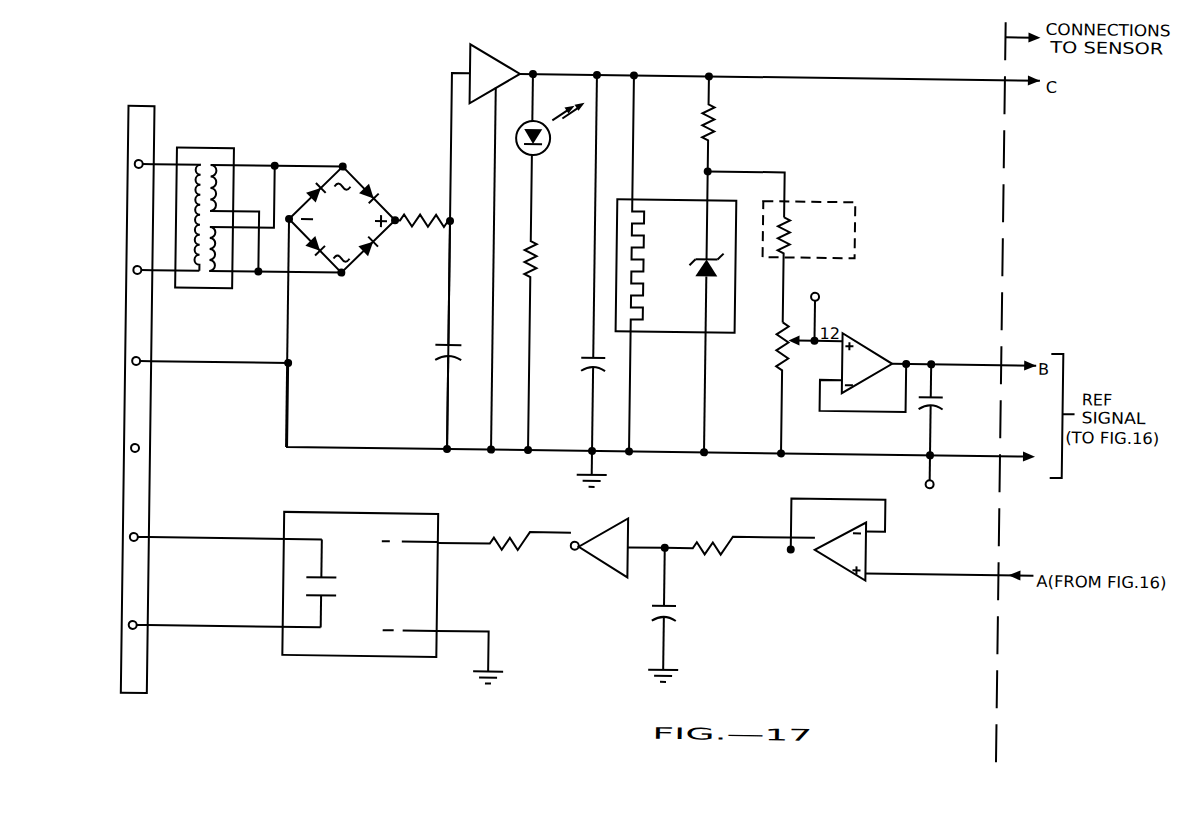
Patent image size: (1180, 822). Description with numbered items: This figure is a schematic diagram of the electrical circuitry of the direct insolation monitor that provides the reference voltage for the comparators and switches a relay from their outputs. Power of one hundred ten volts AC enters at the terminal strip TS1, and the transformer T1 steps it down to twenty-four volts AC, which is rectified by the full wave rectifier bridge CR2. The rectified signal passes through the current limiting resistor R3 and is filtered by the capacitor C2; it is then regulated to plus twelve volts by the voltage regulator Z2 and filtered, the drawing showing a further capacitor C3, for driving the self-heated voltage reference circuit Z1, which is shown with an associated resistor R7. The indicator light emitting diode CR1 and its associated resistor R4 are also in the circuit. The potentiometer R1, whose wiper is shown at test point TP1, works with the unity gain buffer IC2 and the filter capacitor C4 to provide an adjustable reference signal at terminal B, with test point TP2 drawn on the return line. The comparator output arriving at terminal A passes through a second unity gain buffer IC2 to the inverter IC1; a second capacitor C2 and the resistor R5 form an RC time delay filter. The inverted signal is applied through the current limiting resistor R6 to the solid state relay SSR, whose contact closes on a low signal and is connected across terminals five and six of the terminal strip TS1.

The terminal strip TS1 is at (88, 388).
The transformer T1 is at (259, 206).
The full wave rectifier bridge CR2 is at (341, 305).
The current limiting resistor R3 is at (423, 207).
The voltage regulator Z2 is at (502, 74).
The indicator light CR1 is at (554, 129).
The resistor R4 is at (545, 303).
The capacitor C2 is at (544, 451).
The capacitor 5uF C3 is at (571, 280).
The self-heated voltage reference circuit Z1 is at (676, 264).
The resistor 100K R7 is at (809, 262).
The test point 1 TP1 is at (805, 309).
The potentiometer R1 is at (775, 388).
The unity gain buffer IC2 is at (913, 466).
The filter capacitor C4 is at (955, 408).
The test point 2 TP2 is at (949, 480).
The solid state relay SSR is at (382, 598).
The current limiting resistor R6 is at (505, 526).
The inverter IC1 is at (617, 548).
The resistor R5 is at (739, 551).